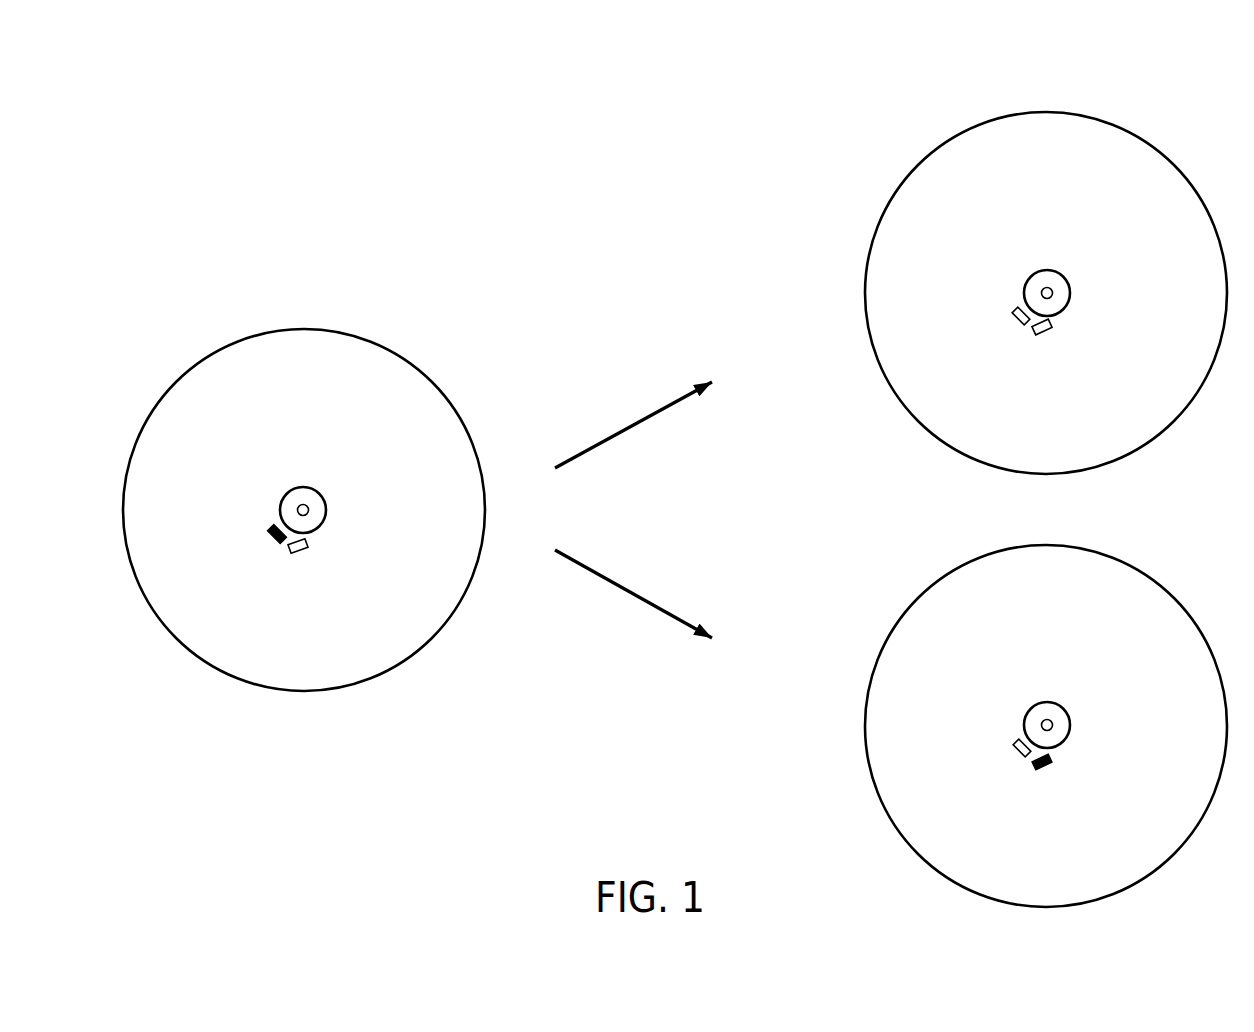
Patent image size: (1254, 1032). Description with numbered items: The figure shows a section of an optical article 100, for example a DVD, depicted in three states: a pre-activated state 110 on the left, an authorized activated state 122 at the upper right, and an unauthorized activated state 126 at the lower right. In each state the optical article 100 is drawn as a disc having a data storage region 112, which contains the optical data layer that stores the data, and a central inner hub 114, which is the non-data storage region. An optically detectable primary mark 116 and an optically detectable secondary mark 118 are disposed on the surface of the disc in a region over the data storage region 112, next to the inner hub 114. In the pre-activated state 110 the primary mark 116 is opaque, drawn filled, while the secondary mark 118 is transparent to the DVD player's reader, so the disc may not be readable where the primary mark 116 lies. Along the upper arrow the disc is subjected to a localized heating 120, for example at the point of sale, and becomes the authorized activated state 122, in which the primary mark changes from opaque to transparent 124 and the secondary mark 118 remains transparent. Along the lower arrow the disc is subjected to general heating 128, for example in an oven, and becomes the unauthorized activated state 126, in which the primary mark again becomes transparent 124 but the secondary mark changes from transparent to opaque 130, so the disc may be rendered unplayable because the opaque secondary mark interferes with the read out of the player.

The optical article 100 is at (238, 110).
The pre-activated state 110 is at (187, 328).
The data storage region 112 is at (397, 392).
The inner hub 114 is at (315, 498).
The optically detectable primary mark 116 is at (268, 535).
The optically detectable secondary mark 118 is at (298, 553).
The localized heating 120 is at (627, 422).
The authorized activated state 122 is at (928, 112).
The transparent primary mark 124 is at (1012, 315).
The unauthorized activated state 126 is at (928, 542).
The general heating 128 is at (628, 593).
The opaque secondary mark 130 is at (1040, 767).